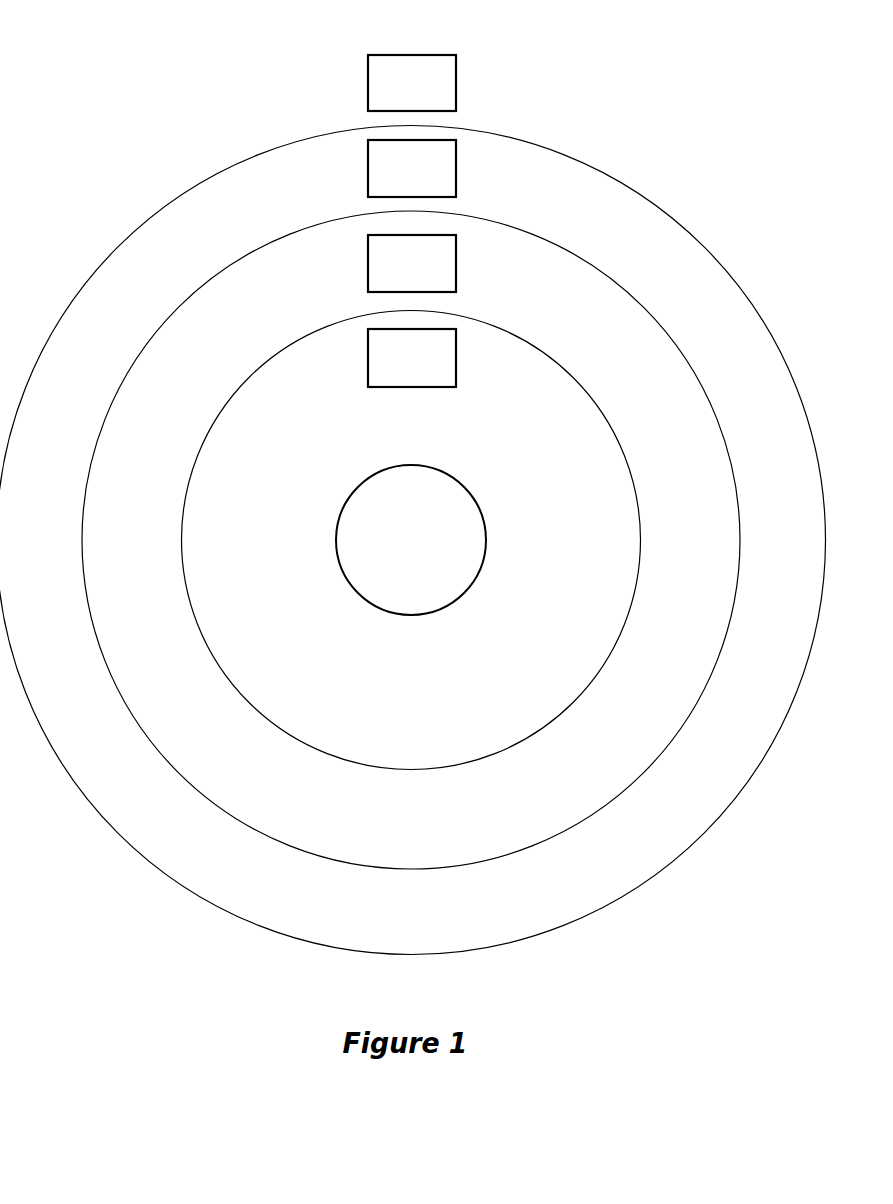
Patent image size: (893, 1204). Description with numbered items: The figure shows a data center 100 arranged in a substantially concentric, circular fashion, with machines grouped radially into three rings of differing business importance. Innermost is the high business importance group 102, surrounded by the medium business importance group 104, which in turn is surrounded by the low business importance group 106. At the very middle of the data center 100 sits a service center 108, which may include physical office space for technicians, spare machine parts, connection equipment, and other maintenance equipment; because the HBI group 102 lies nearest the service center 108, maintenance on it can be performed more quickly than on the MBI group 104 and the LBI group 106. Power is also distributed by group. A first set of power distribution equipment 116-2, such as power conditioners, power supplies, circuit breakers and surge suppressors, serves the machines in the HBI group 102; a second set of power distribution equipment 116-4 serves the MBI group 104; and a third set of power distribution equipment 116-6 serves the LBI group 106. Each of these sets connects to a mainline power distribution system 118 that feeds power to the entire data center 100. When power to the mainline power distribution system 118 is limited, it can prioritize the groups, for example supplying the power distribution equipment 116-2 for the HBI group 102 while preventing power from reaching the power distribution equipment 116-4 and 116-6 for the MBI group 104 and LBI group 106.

The data center 100 is at (413, 482).
The high business importance group 102 is at (542, 580).
The medium business importance group 104 is at (657, 580).
The low business importance group 106 is at (767, 580).
The service center 108 is at (395, 583).
The first set of power distribution equipment 116-2 is at (387, 366).
The second set of power distribution equipment 116-4 is at (387, 275).
The third set of power distribution equipment 116-6 is at (387, 178).
The mainline power distribution system 118 is at (396, 93).